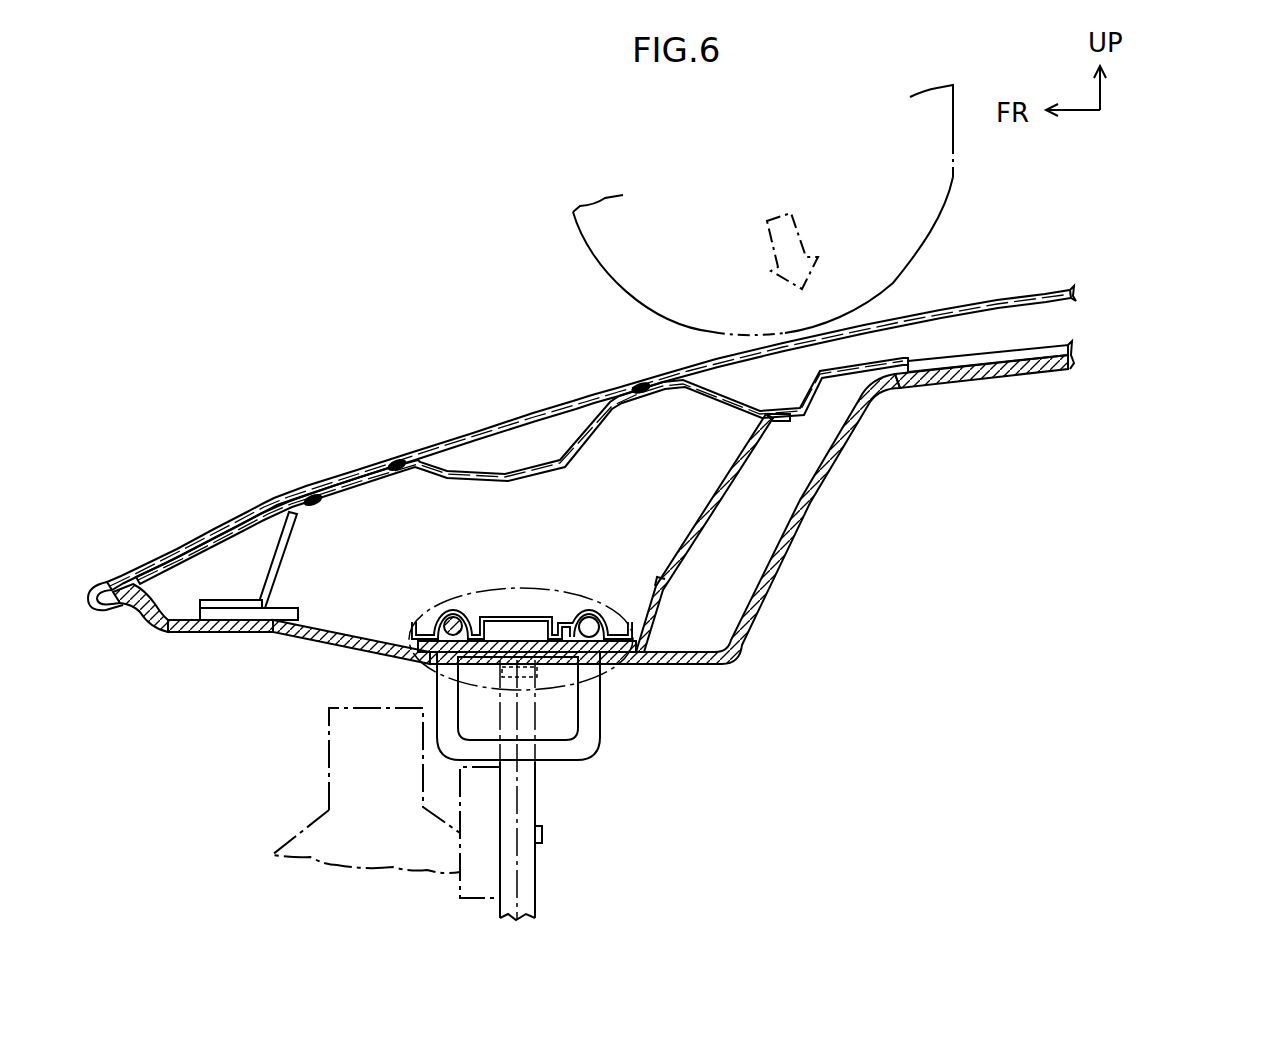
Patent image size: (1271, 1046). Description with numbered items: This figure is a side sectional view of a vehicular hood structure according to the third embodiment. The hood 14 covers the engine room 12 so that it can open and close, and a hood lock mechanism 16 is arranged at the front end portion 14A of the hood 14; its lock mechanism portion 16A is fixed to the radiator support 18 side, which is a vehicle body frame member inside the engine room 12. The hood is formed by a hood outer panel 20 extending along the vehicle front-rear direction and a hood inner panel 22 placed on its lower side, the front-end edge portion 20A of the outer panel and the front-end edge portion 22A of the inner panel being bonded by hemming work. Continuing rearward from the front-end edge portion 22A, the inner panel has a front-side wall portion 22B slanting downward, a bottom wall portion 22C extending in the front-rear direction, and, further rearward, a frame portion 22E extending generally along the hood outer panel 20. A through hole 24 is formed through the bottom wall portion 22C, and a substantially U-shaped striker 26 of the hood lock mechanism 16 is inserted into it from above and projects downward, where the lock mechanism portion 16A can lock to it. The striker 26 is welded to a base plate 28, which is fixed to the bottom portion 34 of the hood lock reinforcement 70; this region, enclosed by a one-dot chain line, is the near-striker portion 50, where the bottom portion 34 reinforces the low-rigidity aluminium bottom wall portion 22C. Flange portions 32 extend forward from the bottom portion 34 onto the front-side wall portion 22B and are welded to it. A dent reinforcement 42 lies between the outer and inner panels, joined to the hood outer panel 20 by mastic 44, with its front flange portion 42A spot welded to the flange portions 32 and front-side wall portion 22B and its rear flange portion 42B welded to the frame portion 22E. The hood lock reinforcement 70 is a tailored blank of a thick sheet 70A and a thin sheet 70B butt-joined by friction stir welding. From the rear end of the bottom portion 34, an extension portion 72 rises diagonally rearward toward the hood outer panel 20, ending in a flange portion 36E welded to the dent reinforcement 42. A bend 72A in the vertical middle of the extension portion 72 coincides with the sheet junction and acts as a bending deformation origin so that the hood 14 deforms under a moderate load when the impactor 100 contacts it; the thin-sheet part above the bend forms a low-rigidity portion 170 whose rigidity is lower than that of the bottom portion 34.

The engine room 12 is at (968, 727).
The hood 14 is at (1232, 178).
The front end portion of the hood 14A is at (500, 381).
The hood lock mechanism 16 is at (705, 776).
The lock mechanism portion 16A is at (542, 848).
The radiator support 18 is at (329, 780).
The hood outer panel 20 is at (1052, 286).
The front-end edge portion of the hood outer panel 20A is at (113, 612).
The hood inner panel 22 is at (1052, 370).
The front-end edge portion of the hood inner panel 22A is at (112, 578).
The front-side wall portion 22B is at (220, 634).
The bottom wall portion 22C is at (413, 664).
The frame portion 22E is at (1003, 385).
The through hole 24 is at (598, 661).
The striker 26 is at (606, 728).
The base plate 28 is at (452, 608).
The flange portions 32 is at (240, 620).
The bottom portion 34 is at (570, 660).
The flange portion 36E is at (780, 424).
The dent reinforcement 42 is at (590, 412).
The flange portion on the front end of the dent reinforcement 42A is at (222, 600).
The flange portion on the rear end of the dent reinforcement 42B is at (906, 357).
The mastic 44 is at (396, 461).
The near-striker portion 50 is at (509, 584).
The hood lock reinforcement 70 is at (630, 557).
The thick sheet 70A is at (598, 665).
The thin sheet 70B is at (719, 492).
The extension portion 72 is at (684, 568).
The bend 72A is at (658, 580).
The impactor 100 is at (950, 196).
The low-rigidity portion 170 is at (693, 533).